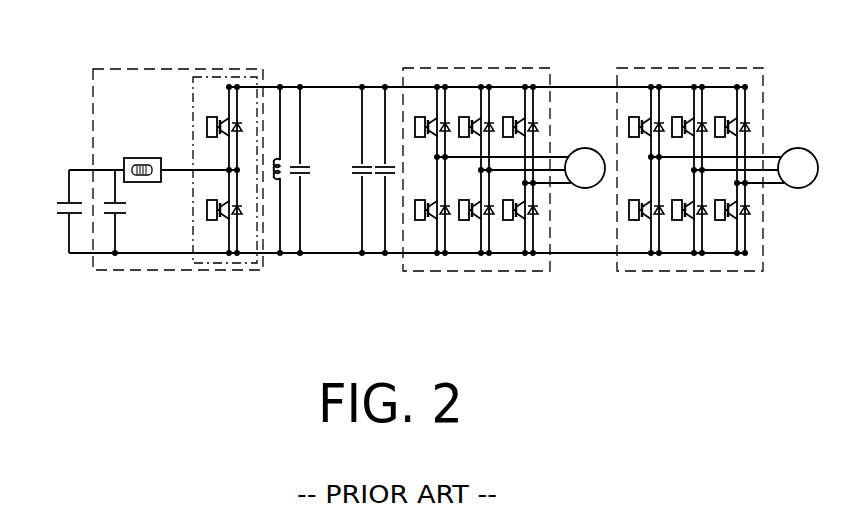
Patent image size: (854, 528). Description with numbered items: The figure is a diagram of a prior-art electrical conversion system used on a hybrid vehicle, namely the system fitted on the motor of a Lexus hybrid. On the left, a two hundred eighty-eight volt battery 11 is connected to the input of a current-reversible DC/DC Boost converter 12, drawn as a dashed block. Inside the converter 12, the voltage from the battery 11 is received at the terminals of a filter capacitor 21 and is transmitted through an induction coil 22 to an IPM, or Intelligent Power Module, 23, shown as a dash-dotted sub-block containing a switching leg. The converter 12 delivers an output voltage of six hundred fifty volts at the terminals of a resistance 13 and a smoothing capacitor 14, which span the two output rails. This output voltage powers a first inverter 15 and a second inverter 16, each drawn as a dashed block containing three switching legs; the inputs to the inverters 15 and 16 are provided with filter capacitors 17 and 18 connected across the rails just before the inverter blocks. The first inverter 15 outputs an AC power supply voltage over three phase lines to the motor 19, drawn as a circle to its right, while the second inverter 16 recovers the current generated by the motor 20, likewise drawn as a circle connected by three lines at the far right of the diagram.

The battery 11 is at (58, 203).
The DC/DC Boost converter 12 is at (176, 296).
The resistance 13 is at (277, 158).
The smoothing capacitor 14 is at (307, 163).
The first inverter 15 is at (480, 68).
The second inverter 16 is at (672, 68).
The filter capacitor 17 is at (366, 164).
The filter capacitor 18 is at (384, 178).
The motor 19 is at (583, 189).
The motor 20 is at (800, 189).
The filter capacitor 21 is at (116, 216).
The induction coil 22 is at (143, 158).
The IPM 23 is at (245, 264).